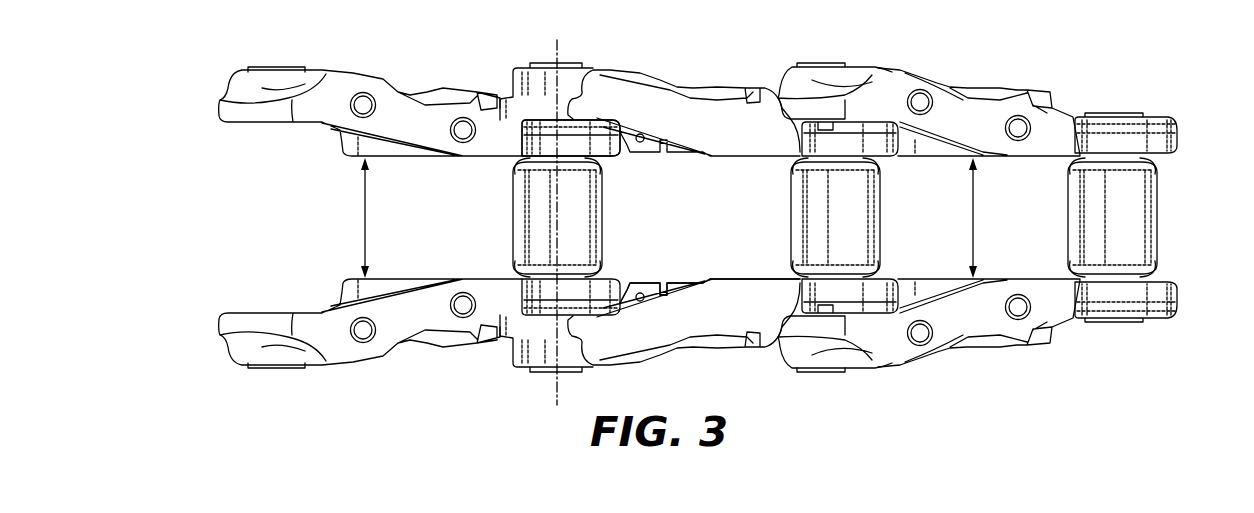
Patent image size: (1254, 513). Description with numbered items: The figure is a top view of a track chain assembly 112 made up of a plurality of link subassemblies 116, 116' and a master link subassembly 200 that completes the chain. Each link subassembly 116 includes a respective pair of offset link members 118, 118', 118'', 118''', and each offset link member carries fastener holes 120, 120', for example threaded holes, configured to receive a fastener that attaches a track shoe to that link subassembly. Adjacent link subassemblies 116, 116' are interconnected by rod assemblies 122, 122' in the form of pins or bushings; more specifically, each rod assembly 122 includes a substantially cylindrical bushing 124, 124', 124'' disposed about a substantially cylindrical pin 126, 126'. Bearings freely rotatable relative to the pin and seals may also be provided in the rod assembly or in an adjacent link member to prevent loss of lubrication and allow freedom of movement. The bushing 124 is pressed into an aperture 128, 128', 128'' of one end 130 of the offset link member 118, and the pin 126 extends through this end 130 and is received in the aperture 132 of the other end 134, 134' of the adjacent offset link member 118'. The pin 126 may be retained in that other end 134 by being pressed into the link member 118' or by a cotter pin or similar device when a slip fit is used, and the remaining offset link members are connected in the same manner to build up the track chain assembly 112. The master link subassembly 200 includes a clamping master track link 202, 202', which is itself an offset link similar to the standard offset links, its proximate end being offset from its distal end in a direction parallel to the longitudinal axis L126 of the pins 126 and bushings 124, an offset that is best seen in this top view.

The track chain assembly 112 is at (1111, 88).
The link subassembly 116 is at (337, 218).
The link subassembly 116' is at (999, 218).
The offset link member 118 is at (370, 98).
The offset link member 118' is at (370, 340).
The offset link member 118'' is at (979, 89).
The offset link member 118''' is at (979, 346).
The fastener hole 120 is at (413, 81).
The fastener hole 120' is at (969, 81).
The rod assembly 122 is at (620, 165).
The rod assembly 122' is at (882, 217).
The bushing 124 is at (585, 218).
The bushing 124' is at (861, 217).
The bushing 124'' is at (1161, 219).
The pin 126 is at (560, 244).
The pin 126' is at (837, 396).
The longitudinal axis L126 is at (558, 50).
The aperture 128 is at (502, 249).
The aperture 128' is at (492, 187).
The aperture 128'' is at (1059, 185).
The one end of offset link member 130 is at (603, 170).
The aperture 132 is at (800, 64).
The other end of offset link member 134 is at (849, 47).
The other end of offset link member 134' is at (835, 370).
The master link subassembly 200 is at (689, 275).
The clamping master track link 202 is at (684, 336).
The clamping master track link 202' is at (684, 98).